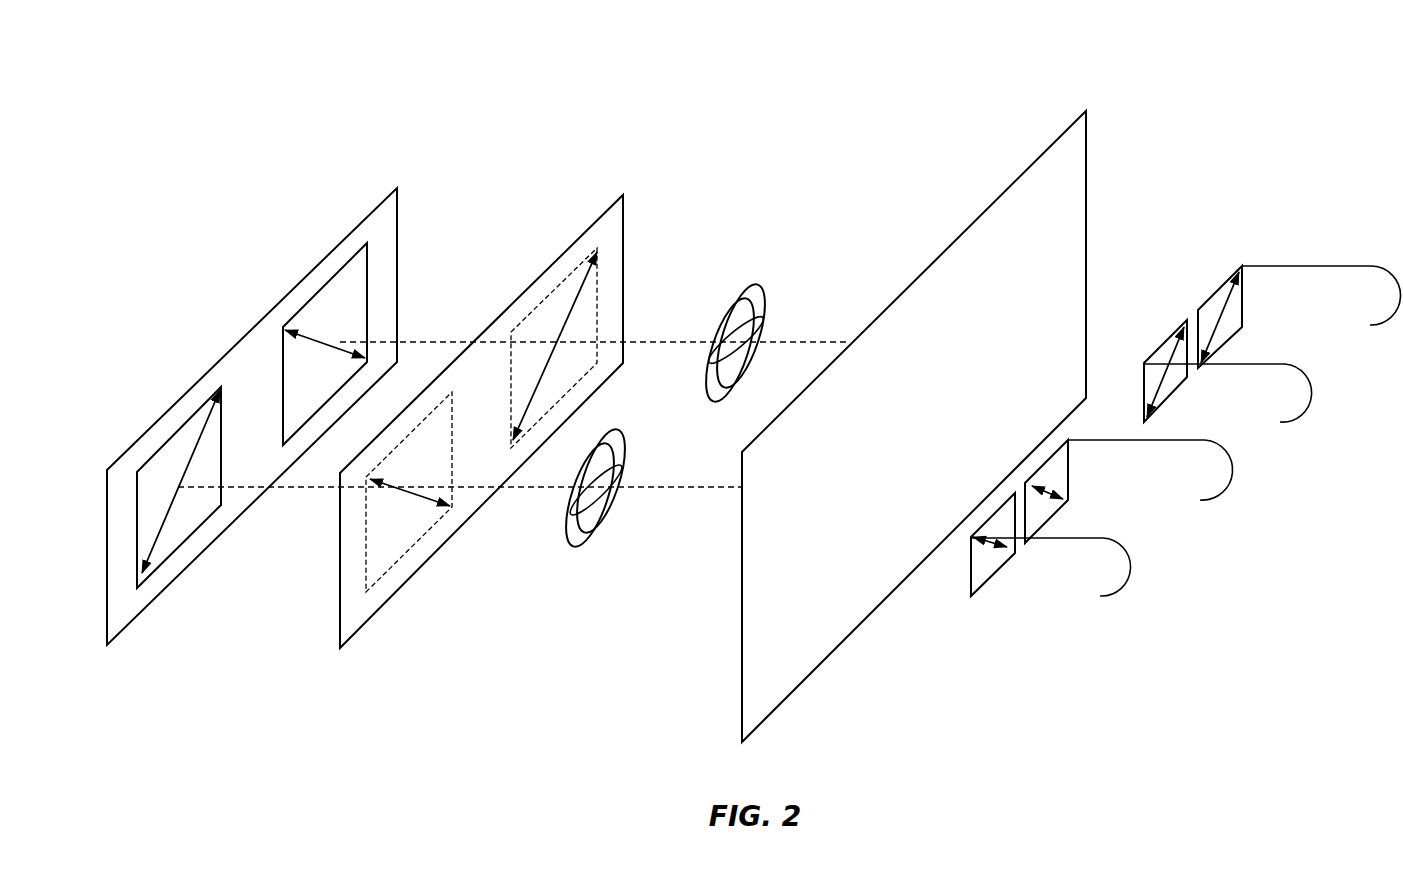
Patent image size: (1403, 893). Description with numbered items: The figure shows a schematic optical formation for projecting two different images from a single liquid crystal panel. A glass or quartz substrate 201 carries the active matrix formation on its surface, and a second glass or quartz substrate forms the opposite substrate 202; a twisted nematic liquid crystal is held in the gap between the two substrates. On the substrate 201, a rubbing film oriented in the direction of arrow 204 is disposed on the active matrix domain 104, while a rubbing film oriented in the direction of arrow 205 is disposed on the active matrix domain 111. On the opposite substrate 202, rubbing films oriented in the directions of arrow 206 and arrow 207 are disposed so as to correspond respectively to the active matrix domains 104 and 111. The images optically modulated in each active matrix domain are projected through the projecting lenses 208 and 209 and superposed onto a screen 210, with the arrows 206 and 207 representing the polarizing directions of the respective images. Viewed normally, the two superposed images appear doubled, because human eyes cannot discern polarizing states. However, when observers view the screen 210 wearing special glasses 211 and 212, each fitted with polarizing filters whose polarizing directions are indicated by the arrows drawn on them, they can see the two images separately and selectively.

The glass or quartz substrate 201 is at (390, 205).
The active matrix domain 104 is at (163, 560).
The arrow 204 is at (173, 503).
The active matrix domain 111 is at (358, 278).
The arrow 205 is at (313, 337).
The opposite substrate 202 is at (613, 217).
The arrow 206 is at (400, 488).
The arrow 207 is at (558, 340).
The projecting lens 208 is at (613, 427).
The projecting lens 209 is at (752, 283).
The screen 210 is at (1077, 132).
The special glasses 211 is at (1157, 442).
The special glasses 212 is at (1282, 265).